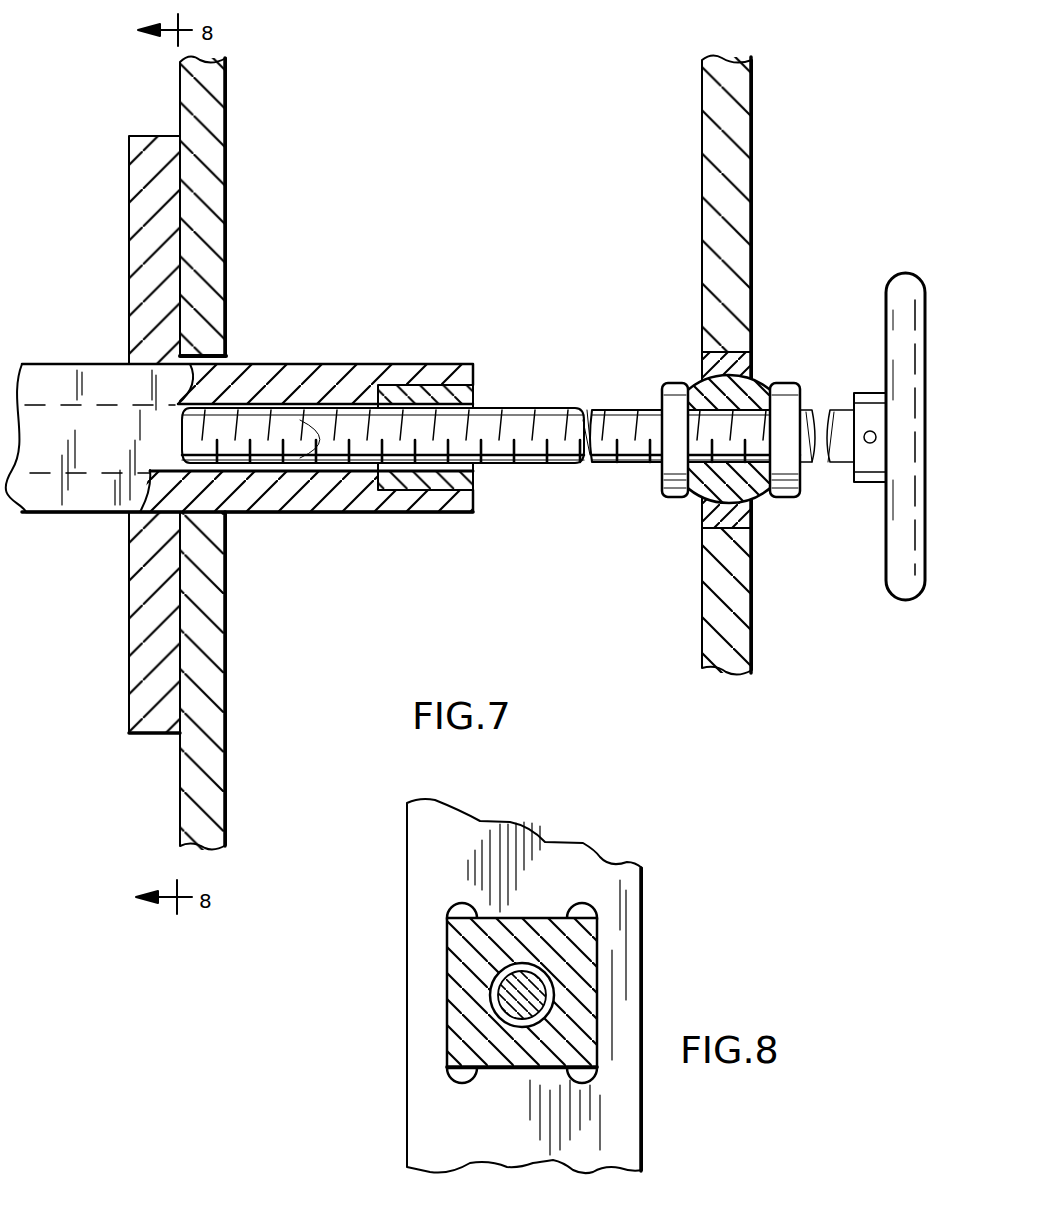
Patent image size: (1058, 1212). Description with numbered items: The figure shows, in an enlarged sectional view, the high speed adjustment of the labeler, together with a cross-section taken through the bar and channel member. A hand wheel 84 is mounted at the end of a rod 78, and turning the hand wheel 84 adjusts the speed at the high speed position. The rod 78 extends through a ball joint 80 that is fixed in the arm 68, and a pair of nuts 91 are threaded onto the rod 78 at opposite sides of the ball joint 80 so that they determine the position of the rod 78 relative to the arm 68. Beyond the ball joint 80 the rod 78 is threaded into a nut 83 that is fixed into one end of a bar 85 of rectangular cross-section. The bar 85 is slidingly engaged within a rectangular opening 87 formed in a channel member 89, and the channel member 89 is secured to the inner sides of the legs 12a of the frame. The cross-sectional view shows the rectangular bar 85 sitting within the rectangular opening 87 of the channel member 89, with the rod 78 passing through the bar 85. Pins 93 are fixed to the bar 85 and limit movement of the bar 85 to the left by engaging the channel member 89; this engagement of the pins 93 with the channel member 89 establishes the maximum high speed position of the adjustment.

In FIG. 7, the legs 12a is at (210, 792).
In FIG. 7, the arm 68 is at (745, 219).
In FIG. 7, the rod 78 is at (618, 432).
In FIG. 8, the rod 78 is at (512, 1012).
In FIG. 7, the ball joint 80 is at (756, 392).
In FIG. 7, the nut 83 is at (473, 387).
In FIG. 7, the hand wheel 84 is at (893, 540).
In FIG. 7, the bar 85 is at (430, 514).
In FIG. 8, the bar 85 is at (462, 1003).
In FIG. 7, the rectangular opening 87 is at (128, 366).
In FIG. 8, the rectangular opening 87 is at (447, 937).
In FIG. 7, the channel member 89 is at (129, 246).
In FIG. 8, the channel member 89 is at (587, 852).
In FIG. 7, the nuts 91 is at (672, 385).
In FIG. 7, the pins 93 is at (340, 440).